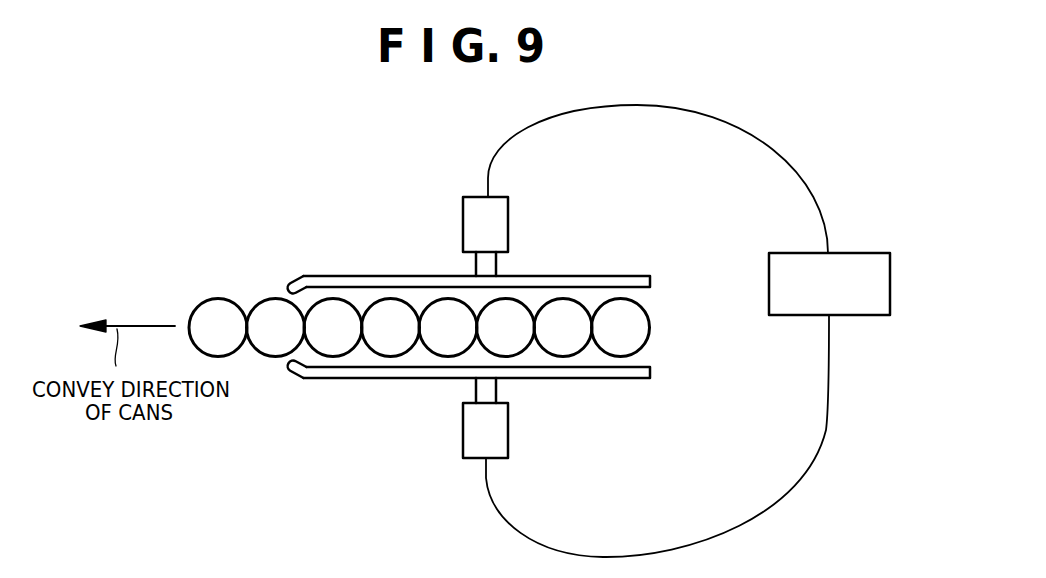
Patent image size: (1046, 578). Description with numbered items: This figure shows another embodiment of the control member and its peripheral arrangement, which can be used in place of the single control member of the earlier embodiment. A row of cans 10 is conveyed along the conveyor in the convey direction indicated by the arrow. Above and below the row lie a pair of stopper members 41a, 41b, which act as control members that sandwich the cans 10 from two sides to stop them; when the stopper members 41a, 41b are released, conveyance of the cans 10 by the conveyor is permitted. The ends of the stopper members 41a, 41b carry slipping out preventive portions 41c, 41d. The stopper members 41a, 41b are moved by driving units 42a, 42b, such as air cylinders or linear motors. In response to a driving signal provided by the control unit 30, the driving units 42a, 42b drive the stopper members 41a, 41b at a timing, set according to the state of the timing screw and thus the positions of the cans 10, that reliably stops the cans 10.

The can 10 is at (628, 328).
The control unit 30 is at (858, 253).
The stopper member 41a is at (408, 275).
The stopper member 41b is at (397, 380).
The slipping out preventive portion 41c is at (292, 278).
The slipping out preventive portion 41d is at (290, 373).
The driving unit 42a is at (508, 222).
The driving unit 42b is at (508, 432).